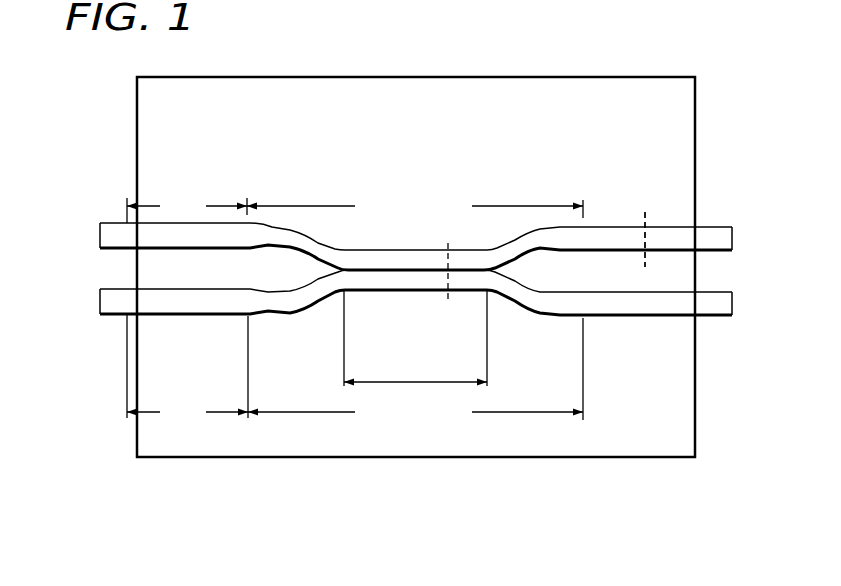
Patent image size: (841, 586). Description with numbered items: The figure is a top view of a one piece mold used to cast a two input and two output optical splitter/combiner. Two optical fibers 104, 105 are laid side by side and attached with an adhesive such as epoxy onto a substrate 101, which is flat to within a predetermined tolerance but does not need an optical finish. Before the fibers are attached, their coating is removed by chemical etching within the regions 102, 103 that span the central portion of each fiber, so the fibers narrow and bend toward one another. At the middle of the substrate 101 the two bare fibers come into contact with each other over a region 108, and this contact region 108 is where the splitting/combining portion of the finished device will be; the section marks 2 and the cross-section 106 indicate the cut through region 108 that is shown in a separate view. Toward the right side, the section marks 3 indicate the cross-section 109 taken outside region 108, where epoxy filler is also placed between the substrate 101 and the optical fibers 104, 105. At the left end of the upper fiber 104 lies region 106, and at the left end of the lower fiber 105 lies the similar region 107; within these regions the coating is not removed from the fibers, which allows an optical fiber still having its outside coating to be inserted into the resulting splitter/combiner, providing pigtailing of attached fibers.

The substrate 101 is at (570, 459).
The region 102 is at (415, 206).
The region 103 is at (415, 372).
The optical fiber 104 is at (110, 226).
The optical fiber 105 is at (103, 300).
The cross-section 106 is at (458, 298).
The region 107 is at (187, 370).
The region 108 is at (415, 338).
The cross-section 109 is at (645, 212).
The section line for FIG. 2 is at (468, 298).
The section line for FIG. 3 is at (665, 267).